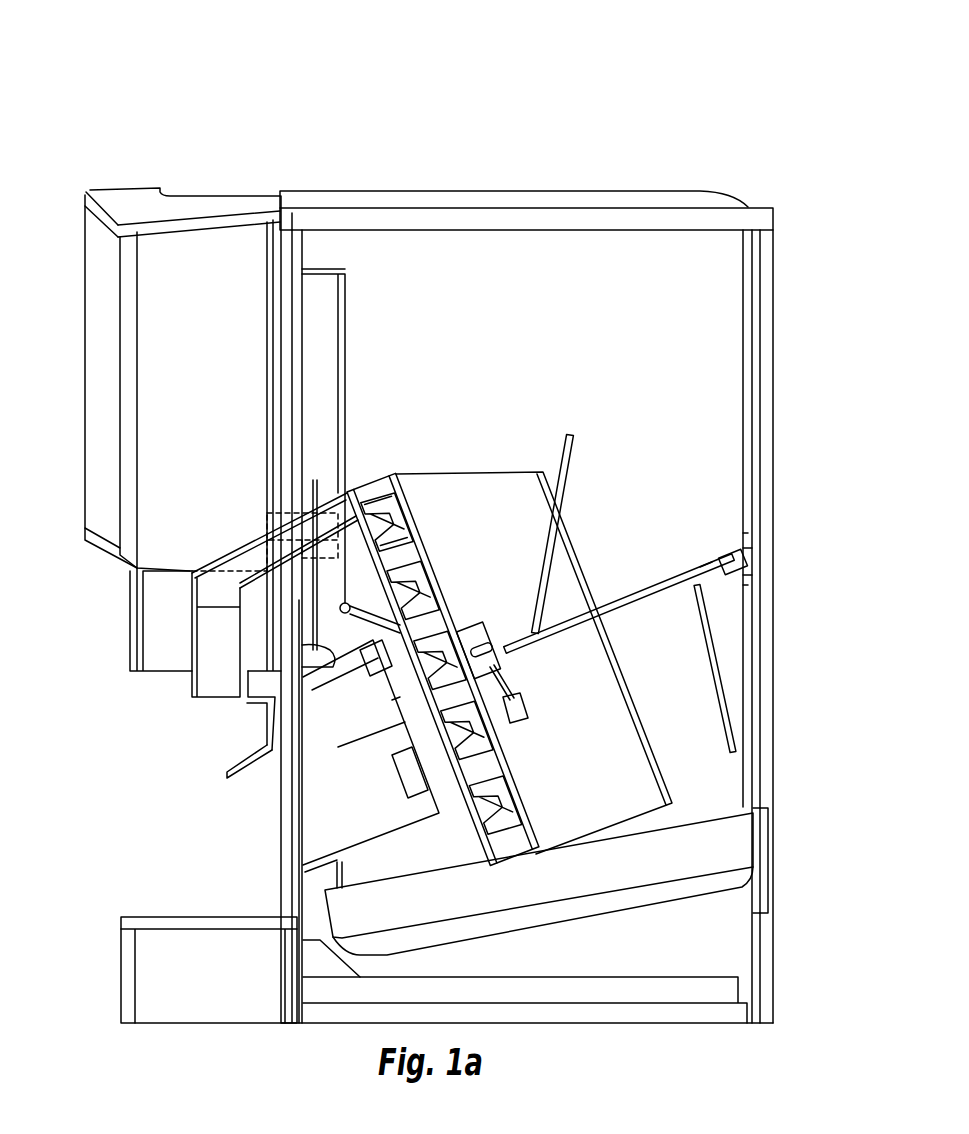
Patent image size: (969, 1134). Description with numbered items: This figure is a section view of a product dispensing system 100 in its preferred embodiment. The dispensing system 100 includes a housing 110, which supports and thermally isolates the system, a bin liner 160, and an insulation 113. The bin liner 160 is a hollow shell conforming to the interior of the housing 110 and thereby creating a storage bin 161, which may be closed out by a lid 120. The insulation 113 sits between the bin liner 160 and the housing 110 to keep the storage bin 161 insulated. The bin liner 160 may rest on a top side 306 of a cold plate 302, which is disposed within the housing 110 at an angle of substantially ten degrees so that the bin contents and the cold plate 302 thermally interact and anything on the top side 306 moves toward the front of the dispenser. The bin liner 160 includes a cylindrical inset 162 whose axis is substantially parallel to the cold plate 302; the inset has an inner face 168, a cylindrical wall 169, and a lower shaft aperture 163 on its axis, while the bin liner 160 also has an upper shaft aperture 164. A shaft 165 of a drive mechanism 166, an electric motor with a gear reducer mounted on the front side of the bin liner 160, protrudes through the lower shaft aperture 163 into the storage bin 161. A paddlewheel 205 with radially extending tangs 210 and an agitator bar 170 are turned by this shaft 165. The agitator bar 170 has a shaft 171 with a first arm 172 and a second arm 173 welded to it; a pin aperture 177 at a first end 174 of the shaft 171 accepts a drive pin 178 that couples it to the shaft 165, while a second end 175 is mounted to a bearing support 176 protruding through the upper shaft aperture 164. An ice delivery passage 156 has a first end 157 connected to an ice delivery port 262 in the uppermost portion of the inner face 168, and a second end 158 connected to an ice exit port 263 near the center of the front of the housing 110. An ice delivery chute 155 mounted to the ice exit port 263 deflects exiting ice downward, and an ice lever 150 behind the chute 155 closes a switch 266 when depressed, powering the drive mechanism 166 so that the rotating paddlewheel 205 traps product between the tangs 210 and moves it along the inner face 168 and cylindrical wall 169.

The dispensing system 100 is at (205, 108).
The housing 110 is at (142, 172).
The insulation 113 is at (584, 957).
The lid 120 is at (470, 200).
The ice lever 150 is at (225, 774).
The ice delivery chute 155 is at (190, 690).
The ice delivery passage 156 is at (283, 537).
The first end 157 is at (340, 492).
The second end 158 is at (237, 568).
The bin liner 160 is at (581, 330).
The storage bin 161 is at (541, 183).
The cylindrical inset 162 is at (583, 701).
The lower shaft aperture 163 is at (428, 693).
The upper shaft aperture 164 is at (738, 552).
The shaft 165 is at (455, 645).
The drive mechanism 166 is at (340, 807).
The inner face 168 is at (422, 546).
The cylindrical wall 169 is at (378, 480).
The agitator bar 170 is at (742, 178).
The shaft 171 is at (655, 590).
The first arm 172 is at (563, 440).
The second arm 173 is at (707, 653).
The first end 174 is at (503, 645).
The second end 175 is at (712, 568).
The bearing support 176 is at (728, 555).
The pin aperture 177 is at (495, 645).
The drive pin 178 is at (537, 715).
The paddlewheel 205 is at (497, 775).
The tangs 210 is at (405, 522).
The ice delivery port 262 is at (395, 505).
The ice exit port 263 is at (203, 588).
The switch 266 is at (248, 695).
The cold plate 302 is at (517, 892).
The top side 306 is at (713, 817).